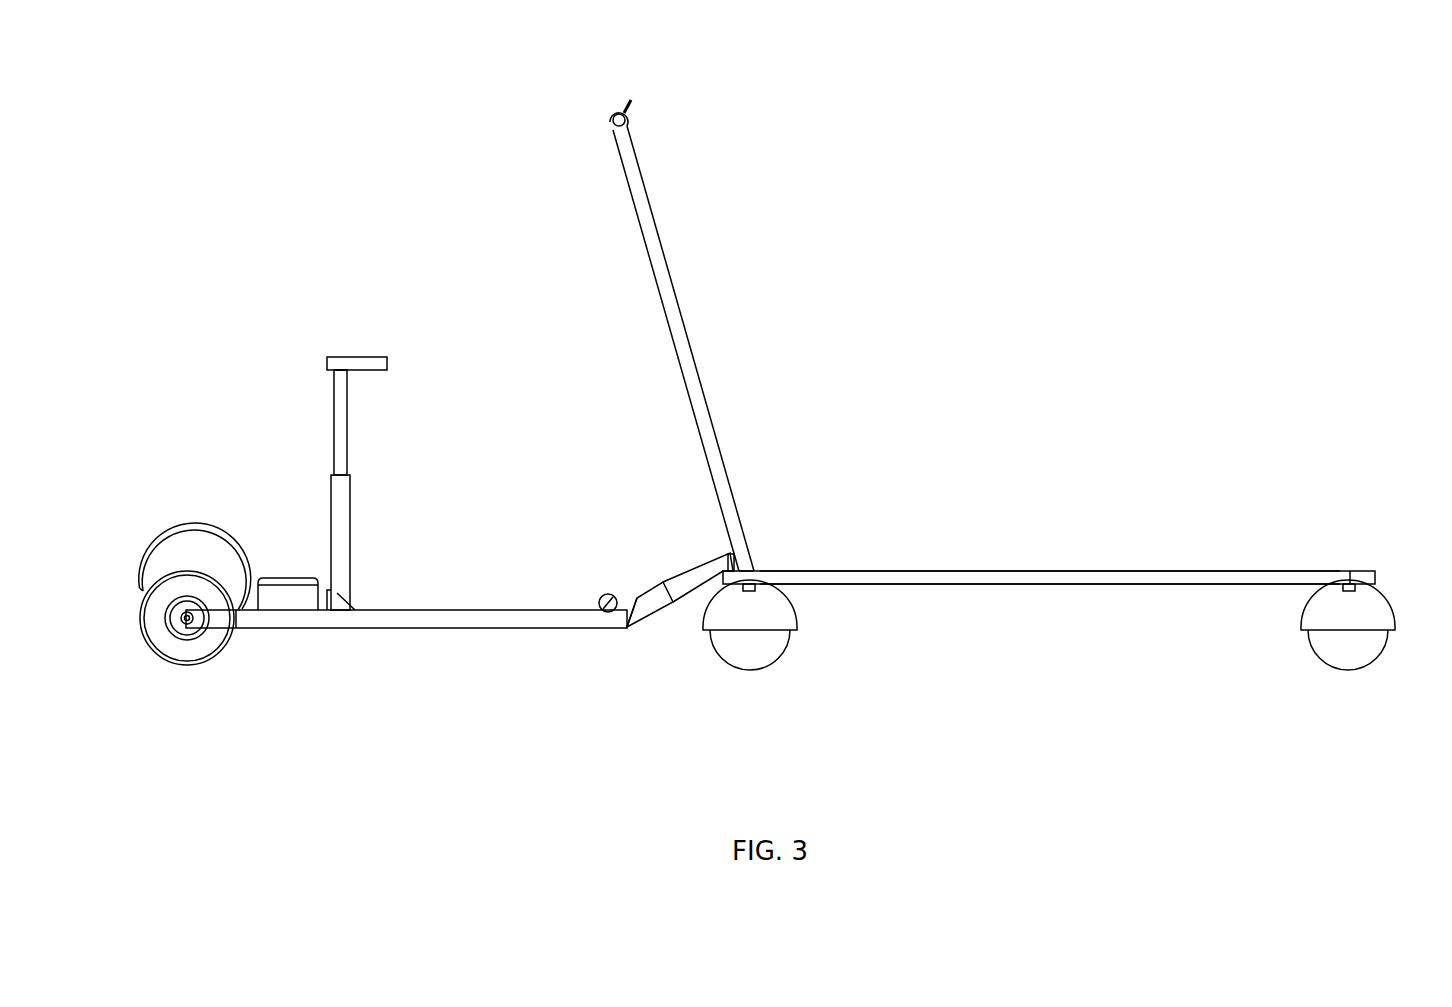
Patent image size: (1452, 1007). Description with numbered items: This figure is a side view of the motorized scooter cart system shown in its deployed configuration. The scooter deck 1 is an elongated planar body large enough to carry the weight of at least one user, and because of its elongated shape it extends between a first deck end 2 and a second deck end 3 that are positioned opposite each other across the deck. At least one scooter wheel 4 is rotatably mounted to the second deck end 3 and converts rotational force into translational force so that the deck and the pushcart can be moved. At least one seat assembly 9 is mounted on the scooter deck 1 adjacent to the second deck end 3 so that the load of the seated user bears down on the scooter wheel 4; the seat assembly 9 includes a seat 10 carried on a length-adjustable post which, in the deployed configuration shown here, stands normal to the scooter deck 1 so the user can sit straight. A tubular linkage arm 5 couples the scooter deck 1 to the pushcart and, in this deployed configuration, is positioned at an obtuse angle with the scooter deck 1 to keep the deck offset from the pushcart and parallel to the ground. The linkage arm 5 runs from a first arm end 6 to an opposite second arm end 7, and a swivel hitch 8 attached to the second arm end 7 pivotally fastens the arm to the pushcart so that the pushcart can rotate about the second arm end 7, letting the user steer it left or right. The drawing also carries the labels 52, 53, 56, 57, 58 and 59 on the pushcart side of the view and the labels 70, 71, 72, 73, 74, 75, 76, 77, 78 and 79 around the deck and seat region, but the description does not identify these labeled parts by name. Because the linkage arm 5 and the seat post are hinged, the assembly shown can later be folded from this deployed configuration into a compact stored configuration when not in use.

The scooter deck 1 is at (241, 630).
The first deck end 2 is at (638, 603).
The second deck end 3 is at (744, 563).
The scooter wheel 4 is at (205, 655).
The linkage arm 5 is at (627, 631).
The first arm end 6 is at (690, 586).
The second arm end 7 is at (428, 630).
The swivel hitch 8 is at (728, 553).
The seat assembly 9 is at (345, 416).
The seat 10 is at (599, 602).
The rear frame 52 is at (1008, 584).
The rear frame upper surface 53 is at (1104, 568).
The rear wheel assembly 56 is at (1073, 559).
The fender 57 is at (197, 561).
The rear frame lower surface 58 is at (1164, 587).
The caster wheel 59 is at (765, 655).
The handlebar 70 is at (380, 362).
The handlebar joint 71 is at (333, 374).
The battery box 72 is at (282, 578).
The grip stub 73 is at (632, 98).
The steering column 74 is at (600, 98).
The post bracket 75 is at (352, 604).
The column pivot 76 is at (628, 125).
The handle post 77 is at (342, 452).
The axle 78 is at (172, 618).
The fender edge 79 is at (160, 578).